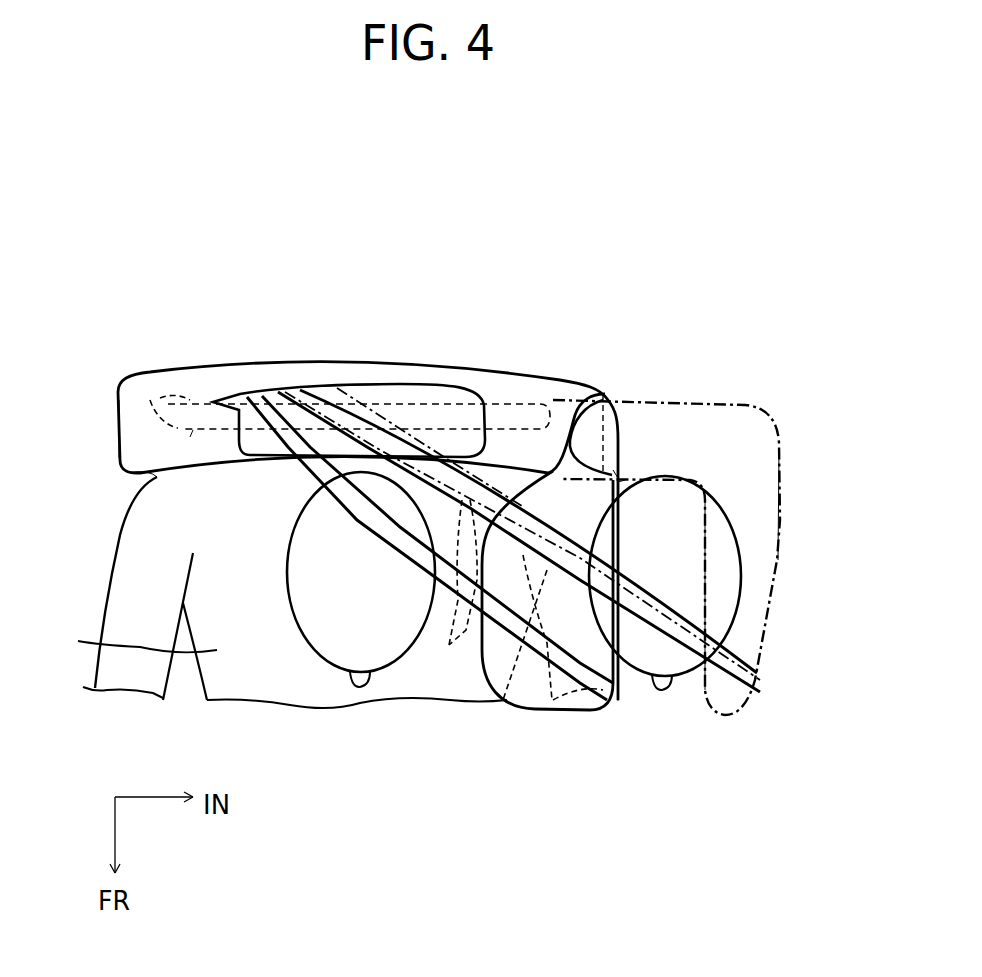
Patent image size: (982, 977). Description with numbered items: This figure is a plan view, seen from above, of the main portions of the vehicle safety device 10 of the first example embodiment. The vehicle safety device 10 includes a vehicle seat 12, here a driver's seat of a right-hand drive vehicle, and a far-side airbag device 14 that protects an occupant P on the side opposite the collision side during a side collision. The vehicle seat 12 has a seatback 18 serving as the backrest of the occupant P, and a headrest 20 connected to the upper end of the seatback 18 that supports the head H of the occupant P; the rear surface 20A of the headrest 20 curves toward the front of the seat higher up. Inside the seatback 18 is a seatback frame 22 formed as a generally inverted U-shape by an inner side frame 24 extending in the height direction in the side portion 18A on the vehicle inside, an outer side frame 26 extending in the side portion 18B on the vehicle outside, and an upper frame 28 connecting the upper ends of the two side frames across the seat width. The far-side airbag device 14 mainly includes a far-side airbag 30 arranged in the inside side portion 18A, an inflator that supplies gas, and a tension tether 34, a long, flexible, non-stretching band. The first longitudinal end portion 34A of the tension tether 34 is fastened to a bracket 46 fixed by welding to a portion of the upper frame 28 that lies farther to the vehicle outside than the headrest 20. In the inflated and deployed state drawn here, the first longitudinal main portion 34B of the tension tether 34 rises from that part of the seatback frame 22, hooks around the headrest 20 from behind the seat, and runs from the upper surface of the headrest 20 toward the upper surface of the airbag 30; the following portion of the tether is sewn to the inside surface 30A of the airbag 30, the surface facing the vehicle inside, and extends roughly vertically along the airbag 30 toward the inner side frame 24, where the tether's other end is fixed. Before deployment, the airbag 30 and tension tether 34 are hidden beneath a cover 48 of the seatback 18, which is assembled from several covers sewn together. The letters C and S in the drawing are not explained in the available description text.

The vehicle safety device 10 is at (463, 230).
The vehicle seat 12 is at (332, 492).
The far-side airbag device 14 is at (596, 736).
The seatback 18 is at (290, 360).
The side portion on the inside of the seatback 18A is at (603, 472).
The side portion on the outside of the seatback 18B is at (133, 478).
The headrest 20 is at (400, 384).
The rear surface of the headrest 20A is at (346, 385).
The seatback frame 22 is at (192, 437).
The inner side frame 24 is at (556, 405).
The outer side frame 26 is at (152, 400).
The upper frame 28 is at (495, 403).
The far-side airbag 30 is at (545, 713).
The inside surface of the airbag 30A is at (619, 537).
The tension tether 34 is at (437, 484).
The first longitudinal end portion 34A is at (243, 393).
The first longitudinal main portion 34B is at (448, 604).
The bracket 46 is at (181, 405).
The cover 48 is at (115, 437).
The occupant P is at (104, 604).
The head H is at (287, 590).
The occupant chest C is at (136, 642).
The seat S is at (620, 482).